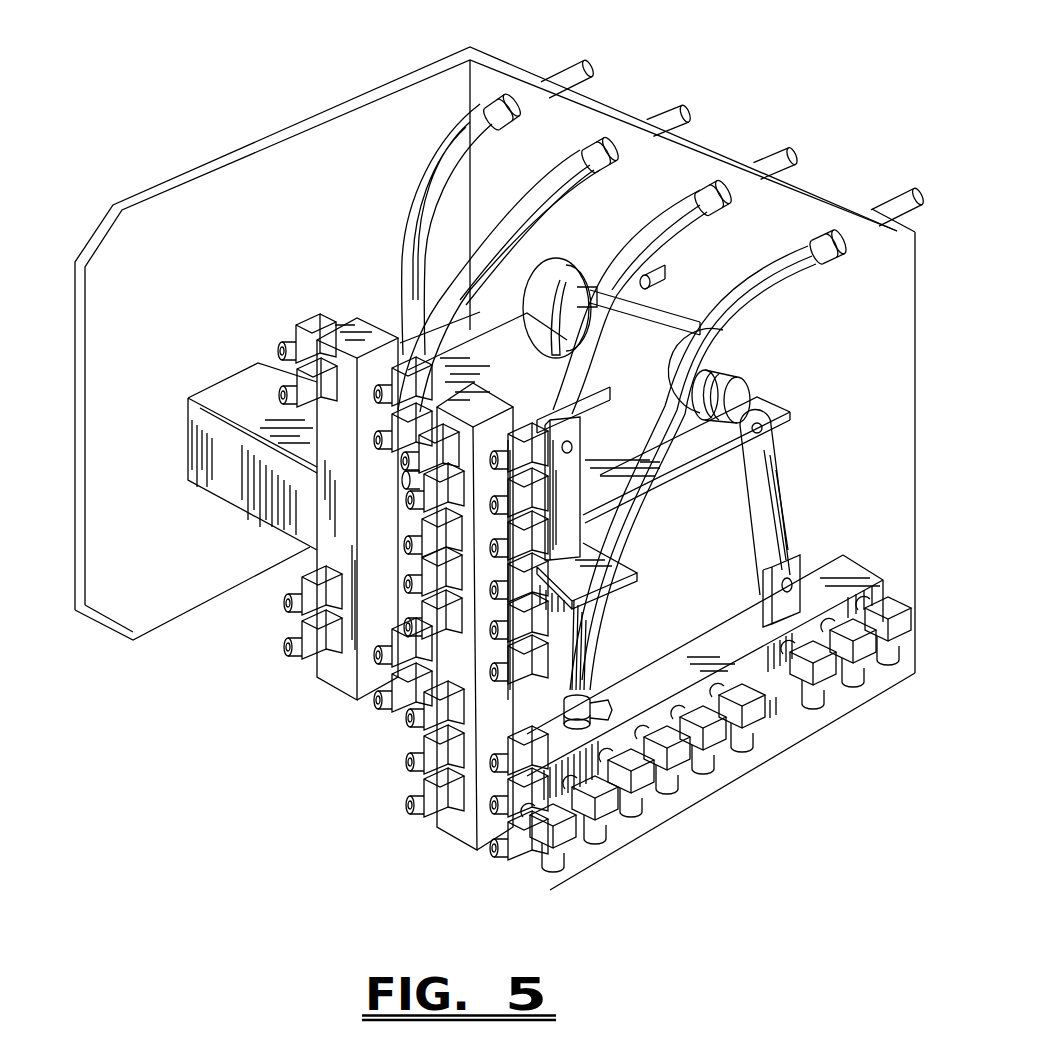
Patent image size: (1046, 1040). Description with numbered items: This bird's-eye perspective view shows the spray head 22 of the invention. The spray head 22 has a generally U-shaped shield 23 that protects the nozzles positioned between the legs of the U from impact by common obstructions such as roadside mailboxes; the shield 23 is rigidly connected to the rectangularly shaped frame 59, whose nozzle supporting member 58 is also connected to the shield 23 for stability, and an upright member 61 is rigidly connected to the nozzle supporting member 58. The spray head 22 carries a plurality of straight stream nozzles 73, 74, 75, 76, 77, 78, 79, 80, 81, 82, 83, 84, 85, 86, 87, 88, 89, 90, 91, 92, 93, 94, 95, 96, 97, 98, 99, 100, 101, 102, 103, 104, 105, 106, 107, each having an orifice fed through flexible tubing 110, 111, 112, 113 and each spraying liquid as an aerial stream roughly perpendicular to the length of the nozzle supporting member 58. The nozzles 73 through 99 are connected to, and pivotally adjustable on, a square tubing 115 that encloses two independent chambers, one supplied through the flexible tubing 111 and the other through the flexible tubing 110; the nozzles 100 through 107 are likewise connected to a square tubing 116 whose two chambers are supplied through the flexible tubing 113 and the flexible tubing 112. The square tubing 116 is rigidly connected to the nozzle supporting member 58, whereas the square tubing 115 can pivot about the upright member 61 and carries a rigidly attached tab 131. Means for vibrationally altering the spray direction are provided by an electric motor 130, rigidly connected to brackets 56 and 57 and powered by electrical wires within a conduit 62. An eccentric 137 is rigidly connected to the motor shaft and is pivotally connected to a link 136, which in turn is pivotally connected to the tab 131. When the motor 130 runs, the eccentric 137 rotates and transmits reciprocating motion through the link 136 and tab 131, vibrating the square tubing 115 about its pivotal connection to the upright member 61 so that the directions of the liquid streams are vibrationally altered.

The spray head 22 is at (233, 101).
The shield 23 is at (228, 153).
The bracket 56 is at (493, 371).
The bracket 57 is at (660, 451).
The nozzle supporting member 58 is at (560, 589).
The rectangular frame 59 is at (652, 486).
The upright member 61 is at (553, 501).
The conduit 62 is at (655, 287).
The nozzle 73 is at (489, 462).
The nozzle 74 is at (400, 461).
The nozzle 75 is at (489, 506).
The nozzle 76 is at (400, 478).
The nozzle 77 is at (489, 548).
The nozzle 78 is at (403, 503).
The nozzle 79 is at (489, 590).
The nozzle 80 is at (402, 546).
The nozzle 81 is at (489, 630).
The nozzle 82 is at (402, 583).
The nozzle 83 is at (489, 672).
The nozzle 84 is at (405, 622).
The nozzle 85 is at (403, 718).
The nozzle 86 is at (489, 764).
The nozzle 87 is at (403, 762).
The nozzle 88 is at (489, 806).
The nozzle 89 is at (403, 805).
The nozzle 90 is at (495, 858).
The nozzle 91 is at (546, 862).
The nozzle 92 is at (600, 838).
The nozzle 93 is at (634, 812).
The nozzle 94 is at (670, 790).
The nozzle 95 is at (706, 768).
The nozzle 96 is at (744, 748).
The nozzle 97 is at (812, 700).
The nozzle 98 is at (856, 680).
The nozzle 99 is at (895, 665).
The nozzle 100 is at (370, 703).
The nozzle 101 is at (283, 647).
The nozzle 102 is at (368, 656).
The nozzle 103 is at (283, 604).
The nozzle 104 is at (371, 440).
The nozzle 105 is at (277, 394).
The nozzle 106 is at (371, 389).
The nozzle 107 is at (276, 350).
The flexible tubing 110 is at (782, 266).
The flexible tubing 111 is at (648, 225).
The flexible tubing 112 is at (540, 187).
The flexible tubing 113 is at (434, 186).
The square tubing 115 is at (441, 726).
The square tubing 116 is at (316, 559).
The electric motor 130 is at (618, 346).
The tab 131 is at (790, 575).
The link 136 is at (778, 493).
The eccentric 137 is at (750, 383).